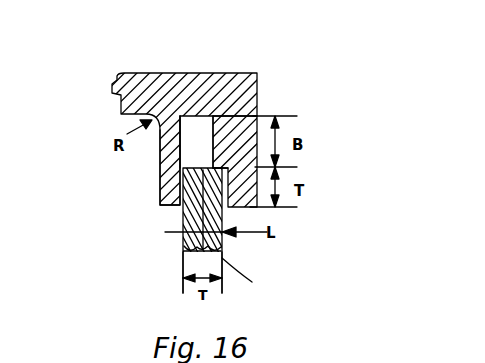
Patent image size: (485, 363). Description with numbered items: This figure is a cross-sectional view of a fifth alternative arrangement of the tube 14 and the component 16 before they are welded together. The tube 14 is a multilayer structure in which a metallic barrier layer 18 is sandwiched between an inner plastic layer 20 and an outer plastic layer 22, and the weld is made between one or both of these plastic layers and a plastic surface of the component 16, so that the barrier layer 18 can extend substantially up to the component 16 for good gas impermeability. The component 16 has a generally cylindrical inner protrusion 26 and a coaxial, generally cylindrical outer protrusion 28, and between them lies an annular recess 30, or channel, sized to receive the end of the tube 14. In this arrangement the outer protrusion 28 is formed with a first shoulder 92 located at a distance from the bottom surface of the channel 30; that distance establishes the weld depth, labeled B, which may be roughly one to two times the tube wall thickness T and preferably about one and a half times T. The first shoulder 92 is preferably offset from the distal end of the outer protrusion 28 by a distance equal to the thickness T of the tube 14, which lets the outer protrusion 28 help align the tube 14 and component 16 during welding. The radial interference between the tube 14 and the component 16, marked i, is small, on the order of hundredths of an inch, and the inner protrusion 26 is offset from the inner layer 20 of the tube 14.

The tube 14 is at (163, 240).
The component 16 is at (150, 170).
The metallic barrier layer 18 is at (222, 257).
The inner plastic layer 20 is at (184, 252).
The outer plastic layer 22 is at (218, 247).
The inner protrusion 26 is at (156, 191).
The outer protrusion 28 is at (246, 150).
The annular recess 30 is at (195, 143).
The first shoulder 92 is at (215, 166).